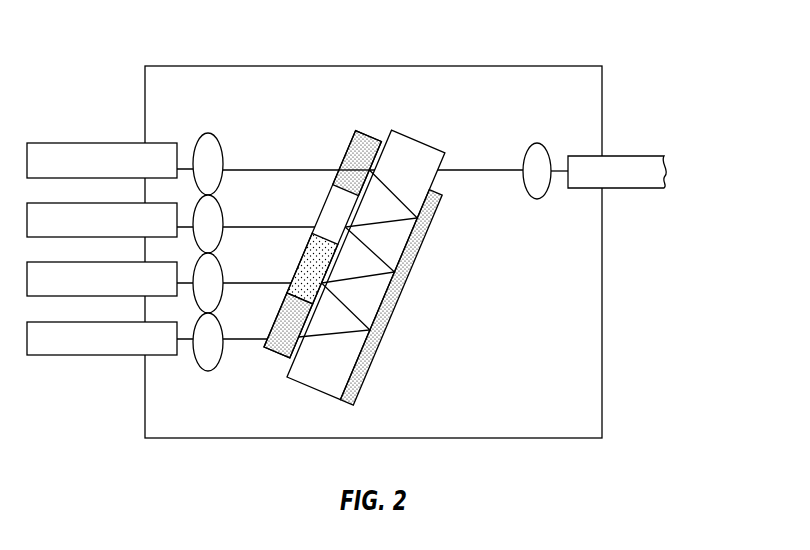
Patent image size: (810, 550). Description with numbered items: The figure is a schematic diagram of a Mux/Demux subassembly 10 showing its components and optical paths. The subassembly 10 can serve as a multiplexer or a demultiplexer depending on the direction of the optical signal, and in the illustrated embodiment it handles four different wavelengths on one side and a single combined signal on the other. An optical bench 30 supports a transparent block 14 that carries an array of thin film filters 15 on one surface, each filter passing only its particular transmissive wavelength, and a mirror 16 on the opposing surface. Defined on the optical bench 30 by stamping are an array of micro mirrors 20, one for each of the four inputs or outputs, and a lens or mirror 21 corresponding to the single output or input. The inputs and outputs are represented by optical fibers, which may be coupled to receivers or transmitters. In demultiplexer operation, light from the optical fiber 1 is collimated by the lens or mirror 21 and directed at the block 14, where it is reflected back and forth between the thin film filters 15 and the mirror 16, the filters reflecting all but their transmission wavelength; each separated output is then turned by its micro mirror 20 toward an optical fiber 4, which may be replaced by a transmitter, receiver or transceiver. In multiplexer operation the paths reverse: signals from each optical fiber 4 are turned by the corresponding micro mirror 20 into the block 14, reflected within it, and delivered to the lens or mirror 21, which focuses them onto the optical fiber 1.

The optical fiber 1 is at (635, 167).
The optical fiber 4 is at (84, 136).
The Mux/Demux subassembly 10 is at (141, 477).
The transparent block 14 is at (408, 155).
The thin film filters 15 is at (351, 113).
The mirror 16 is at (441, 196).
The micro mirrors 20 is at (205, 118).
The lens or mirror 21 is at (537, 190).
The optical bench 30 is at (465, 415).